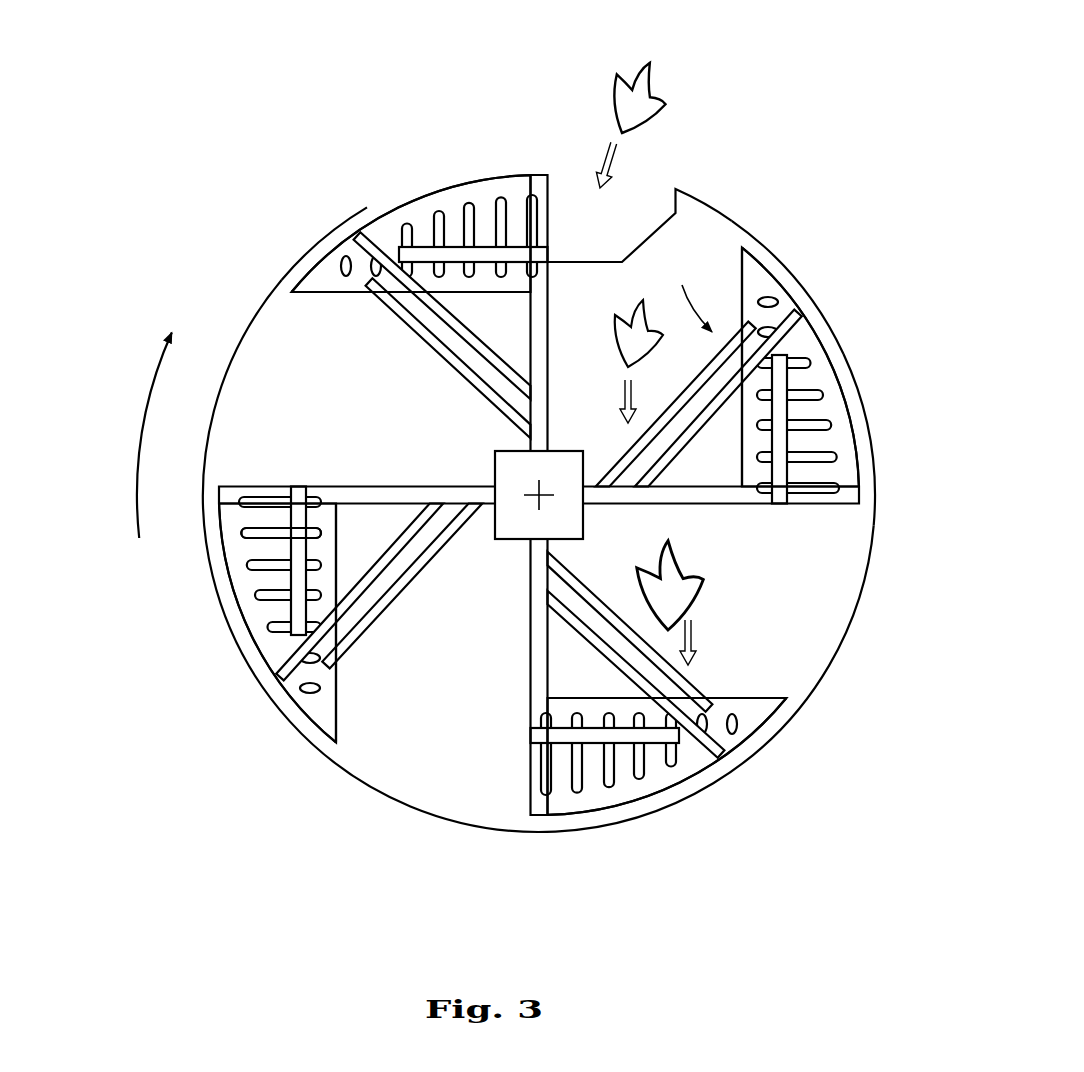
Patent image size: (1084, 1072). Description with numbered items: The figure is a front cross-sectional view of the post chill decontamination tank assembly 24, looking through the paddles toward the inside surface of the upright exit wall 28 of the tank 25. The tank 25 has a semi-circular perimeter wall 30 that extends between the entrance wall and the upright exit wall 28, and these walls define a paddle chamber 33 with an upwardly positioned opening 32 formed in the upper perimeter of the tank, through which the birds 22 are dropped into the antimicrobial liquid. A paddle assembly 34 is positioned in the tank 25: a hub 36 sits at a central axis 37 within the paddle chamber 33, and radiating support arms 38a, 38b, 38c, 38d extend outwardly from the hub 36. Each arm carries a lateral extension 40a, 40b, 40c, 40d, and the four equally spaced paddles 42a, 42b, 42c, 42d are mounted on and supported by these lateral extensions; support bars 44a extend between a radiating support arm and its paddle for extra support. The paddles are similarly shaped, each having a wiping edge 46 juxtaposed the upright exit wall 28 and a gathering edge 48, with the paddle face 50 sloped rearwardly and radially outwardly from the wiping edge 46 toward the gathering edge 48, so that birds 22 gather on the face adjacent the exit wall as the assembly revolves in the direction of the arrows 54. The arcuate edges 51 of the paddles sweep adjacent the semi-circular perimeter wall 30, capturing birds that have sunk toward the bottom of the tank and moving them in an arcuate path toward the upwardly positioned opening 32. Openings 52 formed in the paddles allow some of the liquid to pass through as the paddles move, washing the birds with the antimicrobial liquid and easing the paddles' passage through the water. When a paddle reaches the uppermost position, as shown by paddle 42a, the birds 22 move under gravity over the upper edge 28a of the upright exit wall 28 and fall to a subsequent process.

The birds 22 is at (636, 74).
The post chill decontamination tank assembly 24 is at (280, 217).
The tank 25 is at (290, 263).
The upright exit wall 28 is at (560, 463).
The upper edge of the upright exit wall 28a is at (583, 280).
The semi-circular perimeter wall 30 is at (830, 667).
The upwardly positioned opening 32 is at (652, 202).
The paddle chamber 33 is at (458, 689).
The paddle assembly 34 is at (690, 295).
The hub 36 is at (544, 522).
The central axis 37 is at (543, 497).
The radiating support arm 38a is at (533, 407).
The radiating support arm 38b is at (458, 486).
The radiating support arm 38c is at (533, 633).
The radiating support arm 38d is at (720, 493).
The lateral extension 40a is at (485, 233).
The lateral extension 40b is at (293, 547).
The lateral extension 40c is at (650, 738).
The lateral extension 40d is at (782, 380).
The paddle 42a is at (411, 264).
The paddle 42b is at (255, 615).
The paddle 42c is at (590, 808).
The paddle 42d is at (842, 417).
The support bars 44a is at (462, 332).
The wiping edge 46 is at (333, 290).
The gathering edge 48 is at (383, 213).
The paddle face 50 is at (860, 487).
The arcuate edges 51 is at (788, 260).
The openings 52 is at (242, 535).
The arrows 54 is at (142, 422).